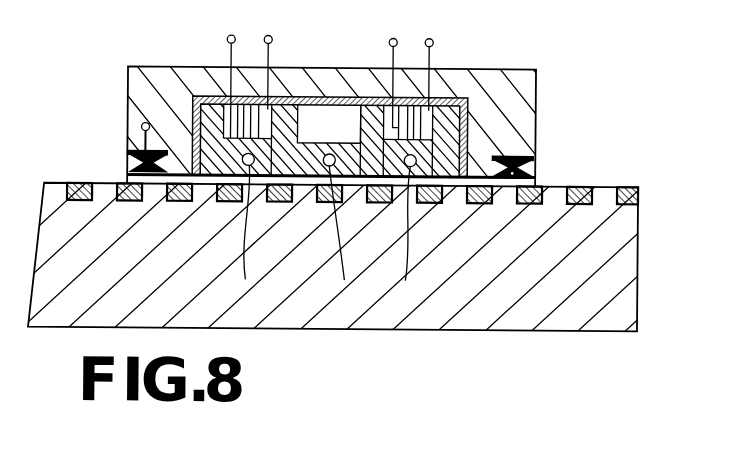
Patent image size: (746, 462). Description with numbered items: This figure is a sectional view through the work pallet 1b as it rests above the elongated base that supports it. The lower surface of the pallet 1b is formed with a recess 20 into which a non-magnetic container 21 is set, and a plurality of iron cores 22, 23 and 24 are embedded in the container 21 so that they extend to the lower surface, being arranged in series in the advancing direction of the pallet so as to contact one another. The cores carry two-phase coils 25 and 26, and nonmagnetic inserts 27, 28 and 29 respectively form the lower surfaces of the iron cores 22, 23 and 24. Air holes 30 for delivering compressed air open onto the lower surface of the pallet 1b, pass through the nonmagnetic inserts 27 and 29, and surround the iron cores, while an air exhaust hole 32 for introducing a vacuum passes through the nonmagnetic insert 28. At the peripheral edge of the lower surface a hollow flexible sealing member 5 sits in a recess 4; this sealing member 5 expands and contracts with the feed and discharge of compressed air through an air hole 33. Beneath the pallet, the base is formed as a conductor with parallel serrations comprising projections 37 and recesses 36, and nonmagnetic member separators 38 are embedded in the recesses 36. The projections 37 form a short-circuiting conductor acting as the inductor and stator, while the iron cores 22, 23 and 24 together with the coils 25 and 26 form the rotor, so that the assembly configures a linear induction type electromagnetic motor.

The pallet 1b is at (493, 68).
The recess 4 is at (147, 152).
The hollow flexible sealing member 5 is at (132, 167).
The recess 20 is at (330, 110).
The non-magnetic container 21 is at (303, 97).
The iron core 22 is at (217, 118).
The iron core 23 is at (350, 107).
The iron core 24 is at (447, 117).
The two-phase coil 25 is at (268, 118).
The two-phase coil 26 is at (400, 112).
The nonmagnetic insert 27 is at (262, 176).
The nonmagnetic insert 28 is at (349, 176).
The nonmagnetic insert 29 is at (432, 165).
The air hole 30 is at (329, 237).
The air exhaust hole 32 is at (340, 237).
The air hole 33 is at (138, 143).
The recess 36 is at (140, 200).
The projection 37 is at (102, 186).
The nonmagnetic member separator 38 is at (220, 200).